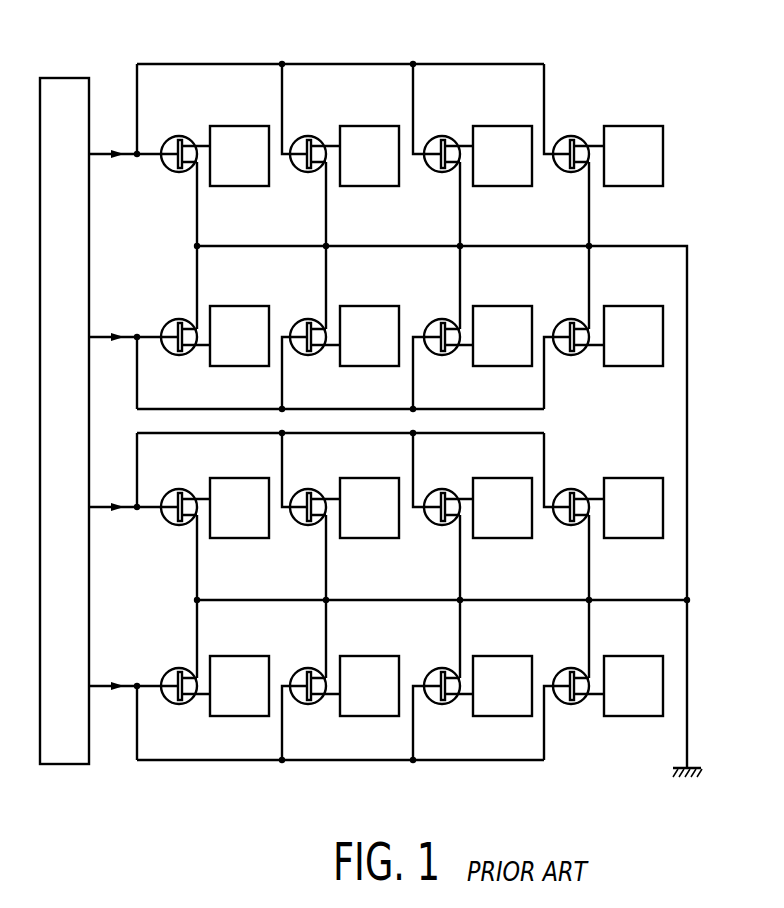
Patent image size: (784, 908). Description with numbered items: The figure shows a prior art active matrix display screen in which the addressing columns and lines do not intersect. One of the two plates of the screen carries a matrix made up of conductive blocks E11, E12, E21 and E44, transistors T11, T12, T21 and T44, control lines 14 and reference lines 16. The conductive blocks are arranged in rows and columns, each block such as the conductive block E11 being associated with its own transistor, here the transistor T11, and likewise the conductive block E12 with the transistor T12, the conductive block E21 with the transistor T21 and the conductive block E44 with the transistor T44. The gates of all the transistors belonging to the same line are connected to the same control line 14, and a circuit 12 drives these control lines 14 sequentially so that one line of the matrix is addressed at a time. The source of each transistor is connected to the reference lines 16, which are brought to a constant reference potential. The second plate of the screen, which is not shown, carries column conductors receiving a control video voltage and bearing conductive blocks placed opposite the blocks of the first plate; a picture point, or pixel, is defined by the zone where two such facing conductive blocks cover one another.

The circuit 12 is at (63, 88).
The control lines 14 is at (99, 156).
The reference lines 16 is at (627, 246).
The transistor T11 is at (166, 141).
The conductive block E11 is at (232, 140).
The transistor T12 is at (296, 141).
The conductive block E12 is at (368, 140).
The transistor T21 is at (167, 324).
The conductive block E21 is at (230, 318).
The transistor T44 is at (562, 673).
The conductive block E44 is at (636, 712).